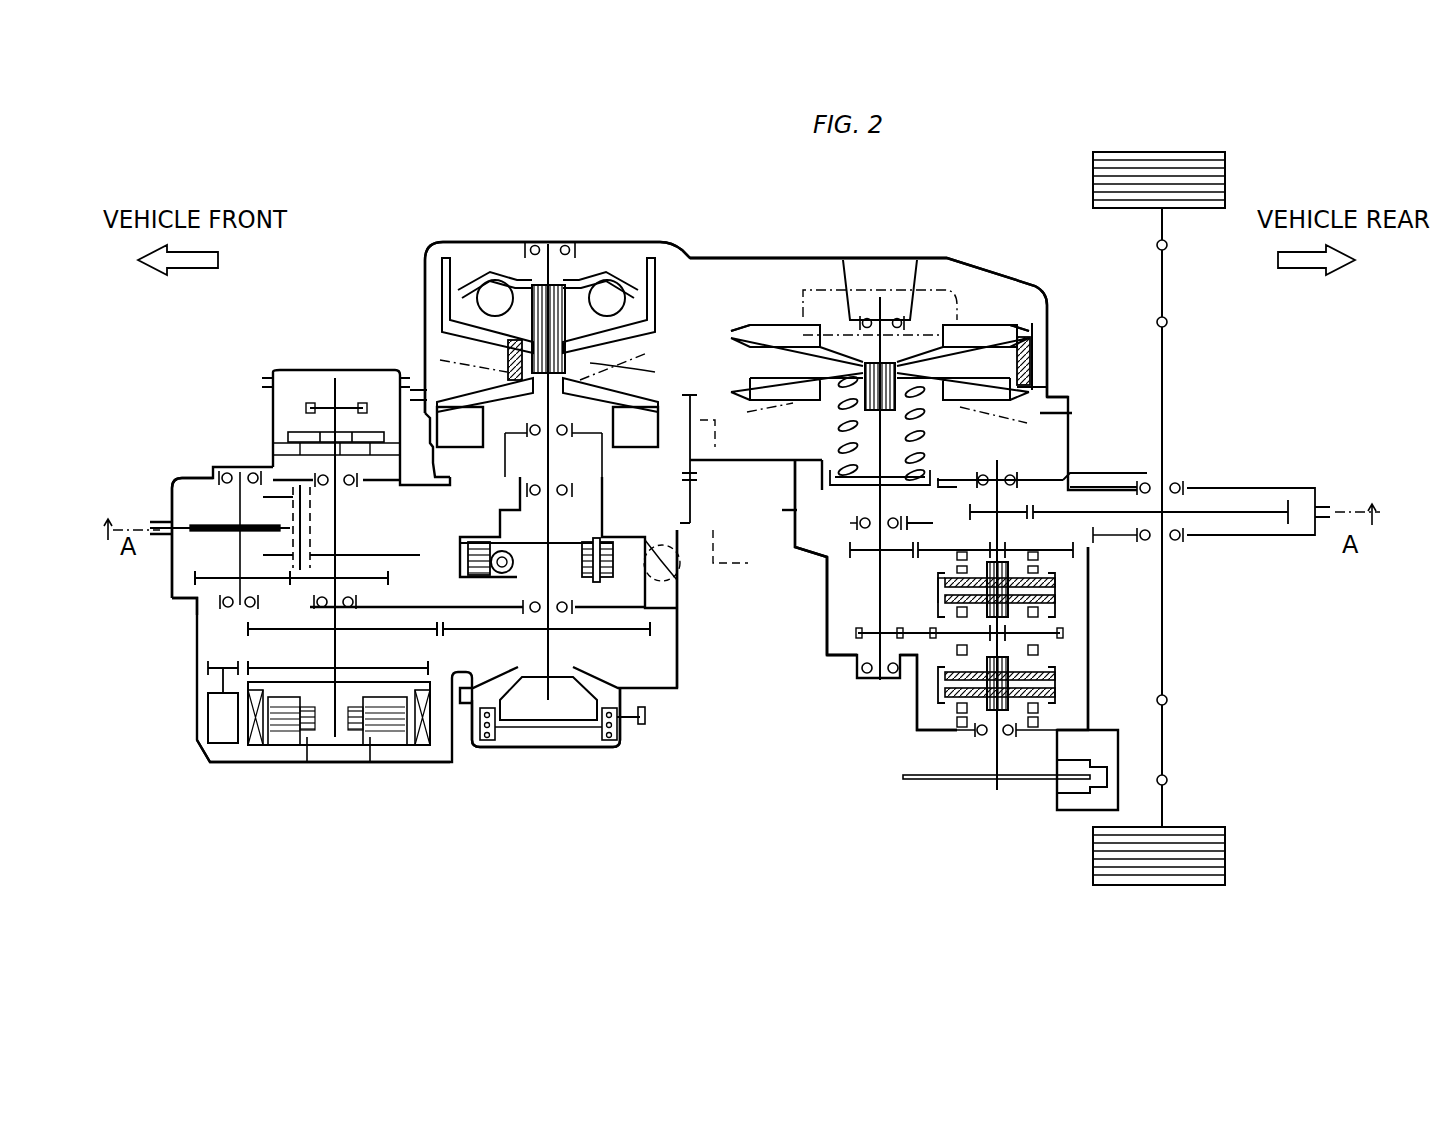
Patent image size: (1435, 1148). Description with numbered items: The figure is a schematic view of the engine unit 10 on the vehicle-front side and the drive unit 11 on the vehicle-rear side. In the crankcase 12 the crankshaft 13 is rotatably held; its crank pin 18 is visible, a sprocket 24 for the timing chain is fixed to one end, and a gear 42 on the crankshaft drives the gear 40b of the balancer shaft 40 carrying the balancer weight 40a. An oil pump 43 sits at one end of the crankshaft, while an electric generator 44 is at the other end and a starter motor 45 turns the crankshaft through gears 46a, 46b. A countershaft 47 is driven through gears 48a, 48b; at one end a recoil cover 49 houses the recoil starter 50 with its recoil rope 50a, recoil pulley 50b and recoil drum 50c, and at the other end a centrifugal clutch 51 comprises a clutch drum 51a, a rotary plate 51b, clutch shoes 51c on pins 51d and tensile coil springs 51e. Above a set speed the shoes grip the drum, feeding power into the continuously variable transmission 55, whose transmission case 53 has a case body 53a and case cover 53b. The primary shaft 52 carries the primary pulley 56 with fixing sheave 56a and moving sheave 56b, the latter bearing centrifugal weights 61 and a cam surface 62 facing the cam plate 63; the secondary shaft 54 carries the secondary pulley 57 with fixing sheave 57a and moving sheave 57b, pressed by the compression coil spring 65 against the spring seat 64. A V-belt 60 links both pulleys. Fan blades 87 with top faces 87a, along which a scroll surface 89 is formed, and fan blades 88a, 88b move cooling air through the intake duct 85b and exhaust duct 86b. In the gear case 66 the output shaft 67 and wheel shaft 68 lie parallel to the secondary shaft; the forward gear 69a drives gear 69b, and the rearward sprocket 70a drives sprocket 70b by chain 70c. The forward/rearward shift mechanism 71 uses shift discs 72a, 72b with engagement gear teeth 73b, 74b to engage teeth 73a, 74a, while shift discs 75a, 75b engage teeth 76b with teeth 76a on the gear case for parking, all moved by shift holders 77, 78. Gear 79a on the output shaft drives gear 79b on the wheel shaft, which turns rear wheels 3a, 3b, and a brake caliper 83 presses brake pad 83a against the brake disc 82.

The rear wheel 3a is at (1225, 170).
The rear wheel 3b is at (1225, 847).
The engine unit 10 is at (260, 800).
The drive unit 11 is at (818, 760).
The crankcase 12 is at (175, 470).
The crankshaft 13 is at (337, 700).
The crank pin 18 is at (305, 512).
The sprocket 24 is at (348, 400).
The balancer shaft 40 is at (240, 552).
The balancer weight 40a is at (205, 520).
The gear 40b is at (195, 598).
The gear 42 is at (375, 580).
The oil pump 43 is at (298, 425).
The electric generator 44 is at (380, 752).
The starter motor 45 is at (220, 740).
The gear 46a is at (215, 670).
The gear 46b is at (300, 667).
The countershaft 47 is at (550, 640).
The gear 48a is at (680, 655).
The gear 48b is at (365, 632).
The recoil cover 49 is at (550, 740).
The recoil starter 50 is at (520, 755).
The recoil rope 50a is at (630, 732).
The recoil pulley 50b is at (612, 745).
The recoil drum 50c is at (575, 715).
The centrifugal clutch 51 is at (455, 548).
The clutch drum 51a is at (680, 570).
The rotary plate 51b is at (530, 545).
The clutch shoe 51c is at (480, 540).
The pin 51d is at (595, 580).
The tensile coil spring 51e is at (497, 575).
The primary shaft 52 is at (552, 262).
The transmission case 53 is at (775, 245).
The case body 53a is at (745, 465).
The case cover 53b is at (730, 255).
The secondary shaft 54 is at (885, 300).
The continuously variable transmission 55 is at (658, 218).
The primary pulley 56 is at (668, 280).
The fixing sheave 56a is at (635, 432).
The moving sheave 56b is at (650, 308).
The secondary pulley 57 is at (985, 296).
The fixing sheave 57a is at (1035, 320).
The moving sheave 57b is at (1030, 390).
The V-belt 60 is at (510, 355).
The centrifugal weight 61 is at (495, 295).
The cam surface 62 is at (475, 288).
The cam plate 63 is at (518, 282).
The spring seat 64 is at (835, 540).
The compression coil spring 65 is at (835, 430).
The gear case 66 is at (825, 622).
The output shaft 67 is at (1005, 480).
The wheel shaft 68 is at (1165, 645).
The forward gear 69a is at (865, 555).
The gear 69b is at (930, 528).
The rearward sprocket 70a is at (870, 640).
The sprocket 70b is at (1050, 647).
The chain 70c is at (905, 675).
The forward/rearward shift mechanism 71 is at (962, 520).
The shift disc 72a is at (1060, 582).
The shift disc 72b is at (1060, 600).
The engagement gear teeth 73a is at (1030, 552).
The engagement gear teeth 73b is at (1045, 575).
The engagement gear teeth 74a is at (959, 645).
The engagement gear teeth 74b is at (1040, 632).
The shift disc 75a is at (1060, 676).
The shift disc 75b is at (1060, 695).
The engagement gear teeth 76a is at (960, 730).
The engagement gear teeth 76b is at (1040, 705).
The shift holder 77 is at (937, 592).
The shift holder 78 is at (937, 690).
The gear 79a is at (1060, 490).
The gear 79b is at (1255, 505).
The brake disc 82 is at (913, 782).
The brake caliper 83 is at (1068, 805).
The brake pad 83a is at (1065, 790).
The intake duct 85b is at (660, 535).
The exhaust duct 86b is at (832, 285).
The fan blade 87 is at (455, 440).
The top face 87a is at (420, 385).
The fan blade 88a is at (965, 325).
The fan blade 88b is at (1070, 412).
The scroll surface 89 is at (400, 420).